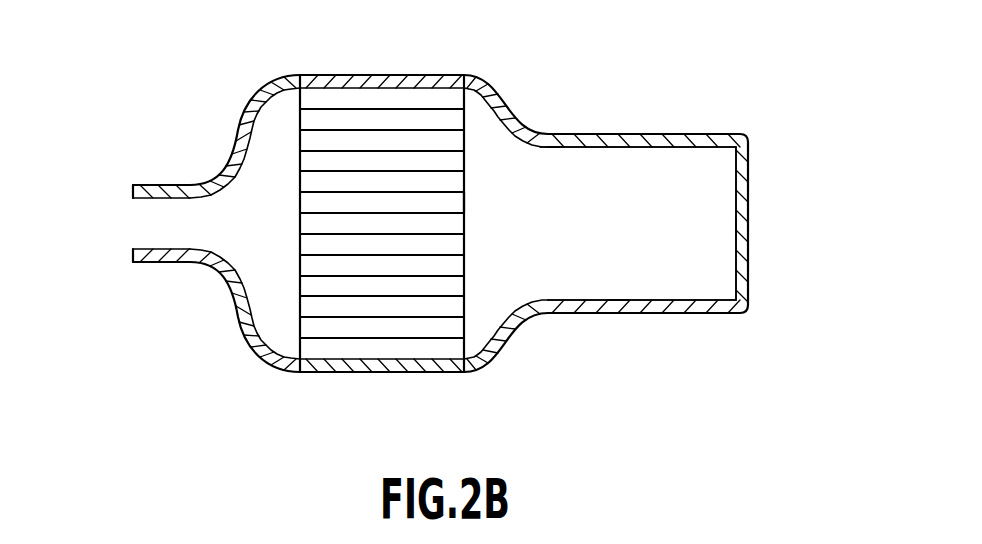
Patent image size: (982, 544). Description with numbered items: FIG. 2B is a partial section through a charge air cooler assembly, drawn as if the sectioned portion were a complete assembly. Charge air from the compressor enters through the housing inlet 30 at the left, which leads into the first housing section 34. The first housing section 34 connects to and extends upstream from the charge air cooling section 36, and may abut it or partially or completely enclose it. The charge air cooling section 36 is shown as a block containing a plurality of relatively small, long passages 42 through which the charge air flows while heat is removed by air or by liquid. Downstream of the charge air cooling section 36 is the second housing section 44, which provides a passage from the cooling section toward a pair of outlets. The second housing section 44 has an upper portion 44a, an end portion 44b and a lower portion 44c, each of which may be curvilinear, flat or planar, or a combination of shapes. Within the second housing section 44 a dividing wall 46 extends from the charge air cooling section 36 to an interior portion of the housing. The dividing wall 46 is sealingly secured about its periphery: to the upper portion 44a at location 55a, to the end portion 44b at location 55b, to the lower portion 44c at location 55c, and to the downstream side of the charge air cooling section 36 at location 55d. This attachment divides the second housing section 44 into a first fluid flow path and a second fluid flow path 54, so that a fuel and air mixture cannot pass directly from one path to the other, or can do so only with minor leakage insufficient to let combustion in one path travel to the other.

The housing inlet 30 is at (133, 223).
The first housing section 34 is at (221, 281).
The charge air cooling section 36 is at (298, 142).
The passages 42 is at (443, 262).
The second housing section 44 is at (585, 313).
The upper portion 44a is at (590, 134).
The end portion 44b is at (750, 237).
The lower portion 44c is at (635, 313).
The dividing wall 46 is at (692, 267).
The second fluid flow path 54 is at (632, 160).
The location 55a is at (549, 148).
The location 55b is at (736, 228).
The location 55c is at (618, 300).
The location 55d is at (467, 202).